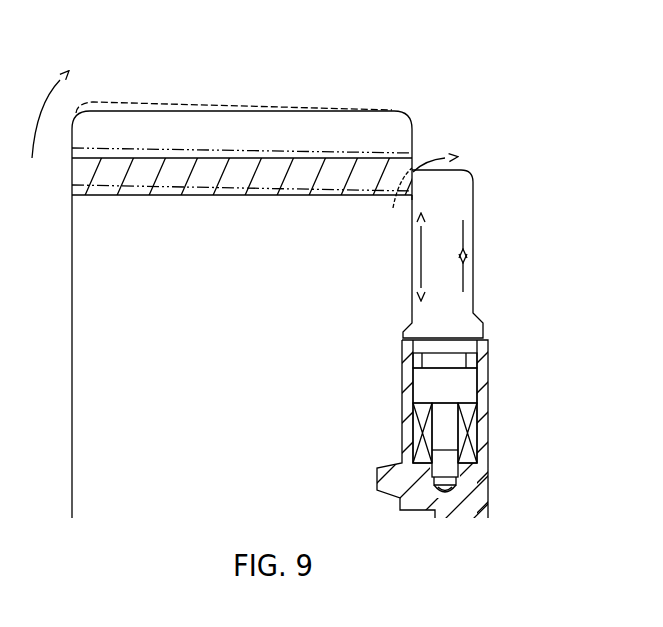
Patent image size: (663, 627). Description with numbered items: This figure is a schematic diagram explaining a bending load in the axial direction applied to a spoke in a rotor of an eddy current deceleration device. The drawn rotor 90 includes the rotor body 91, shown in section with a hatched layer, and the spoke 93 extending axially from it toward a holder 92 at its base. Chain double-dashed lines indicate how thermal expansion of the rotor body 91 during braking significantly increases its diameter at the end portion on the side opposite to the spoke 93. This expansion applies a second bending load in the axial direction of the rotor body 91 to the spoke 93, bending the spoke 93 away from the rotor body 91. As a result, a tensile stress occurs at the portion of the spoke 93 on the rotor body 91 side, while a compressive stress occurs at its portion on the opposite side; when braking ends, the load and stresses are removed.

The case 90 is at (365, 98).
The rotor body 91 is at (264, 157).
The holder 92 is at (490, 409).
The spoke 93 is at (474, 210).